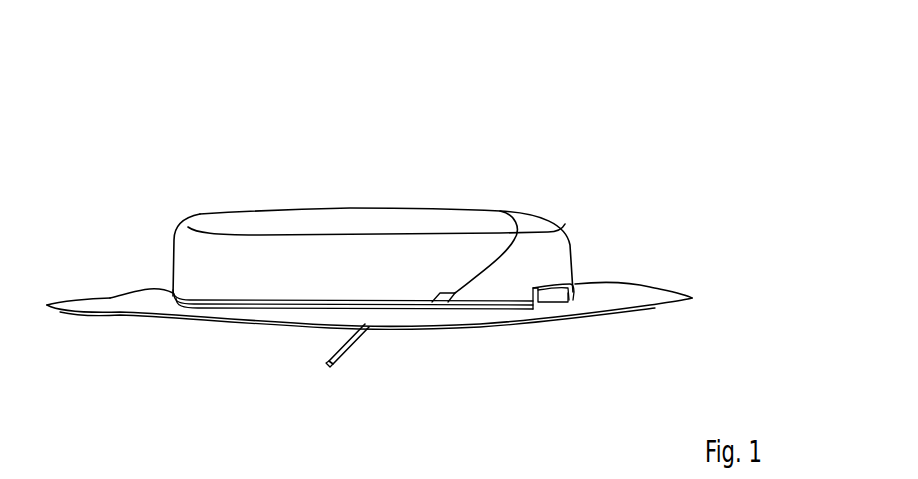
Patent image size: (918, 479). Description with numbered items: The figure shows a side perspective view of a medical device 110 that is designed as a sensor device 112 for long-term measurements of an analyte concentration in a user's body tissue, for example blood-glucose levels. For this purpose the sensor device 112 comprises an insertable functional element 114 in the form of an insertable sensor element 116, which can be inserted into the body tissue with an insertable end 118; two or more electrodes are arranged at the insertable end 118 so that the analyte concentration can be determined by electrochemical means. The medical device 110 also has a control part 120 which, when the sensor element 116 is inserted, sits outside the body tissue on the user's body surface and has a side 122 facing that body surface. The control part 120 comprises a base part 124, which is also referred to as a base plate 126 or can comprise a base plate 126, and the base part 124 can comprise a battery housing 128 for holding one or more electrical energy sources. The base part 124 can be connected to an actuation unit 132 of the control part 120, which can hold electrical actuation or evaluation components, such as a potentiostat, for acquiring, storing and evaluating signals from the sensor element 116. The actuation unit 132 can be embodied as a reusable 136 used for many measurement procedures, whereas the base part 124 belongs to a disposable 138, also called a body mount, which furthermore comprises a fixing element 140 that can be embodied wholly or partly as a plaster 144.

The medical device 110 is at (413, 161).
The sensor device 112 is at (413, 161).
The control part 120 is at (443, 178).
The reusable 136 is at (350, 196).
The actuation unit 132 is at (298, 228).
The fixing element 140 is at (283, 253).
The plaster 144 is at (147, 296).
The disposable 138 is at (395, 240).
The base part 124 is at (645, 240).
The battery housing 128 is at (558, 250).
The base plate 126 is at (572, 283).
The side facing the body surface 122 is at (153, 340).
The insertable functional element 114 is at (406, 387).
The insertable sensor element 116 is at (406, 387).
The insertable end 118 is at (333, 362).